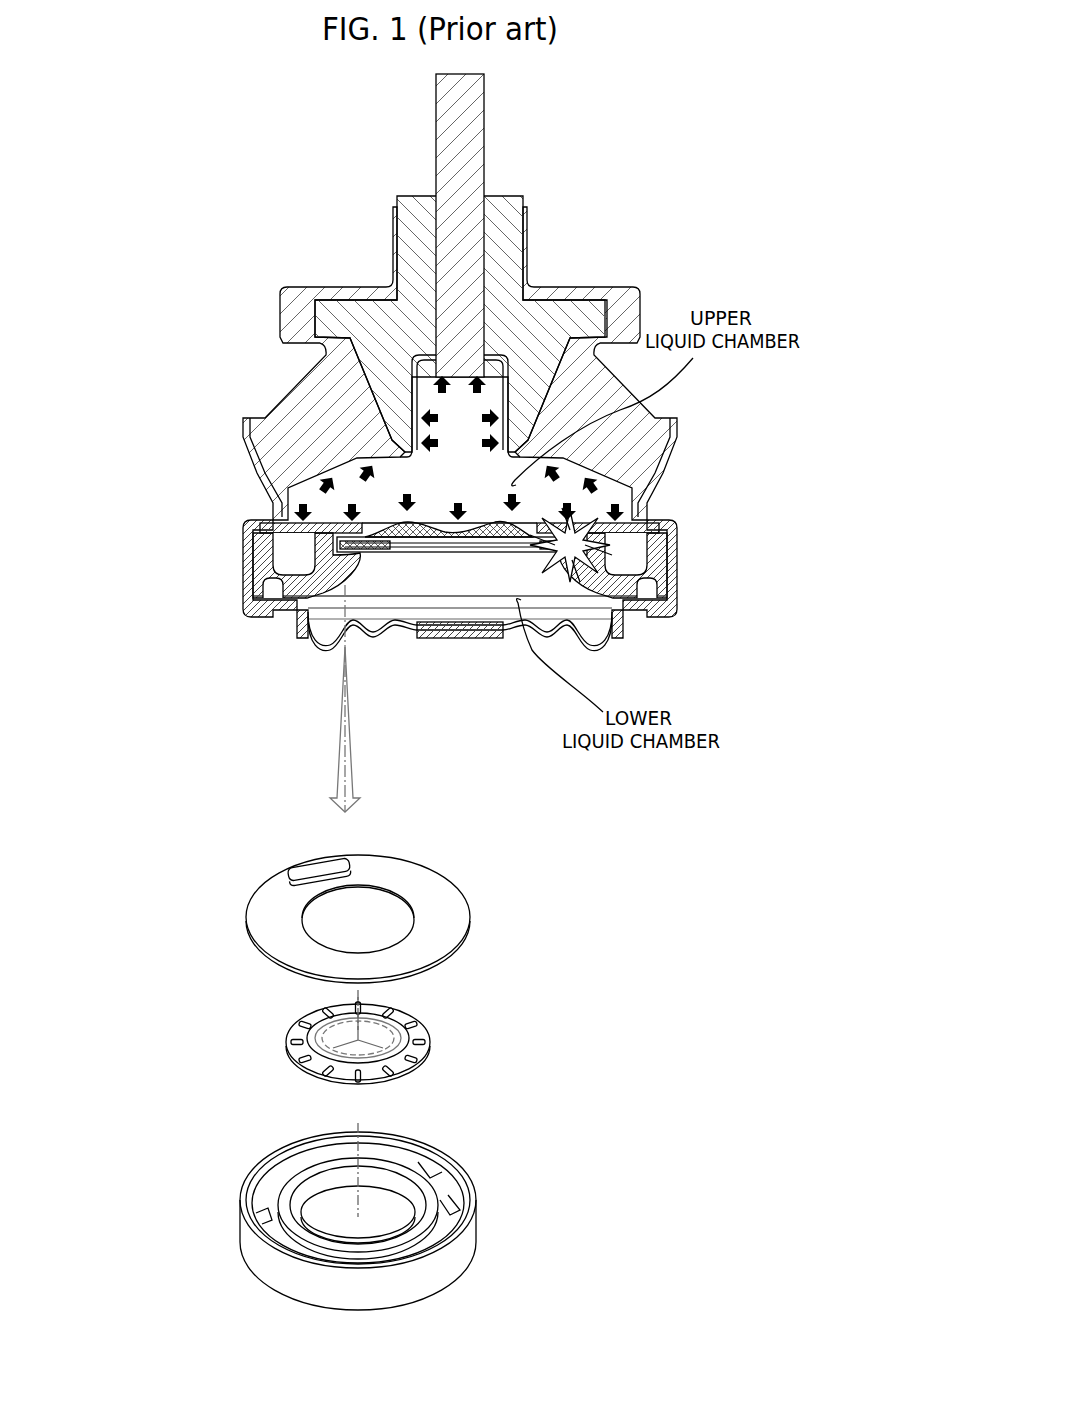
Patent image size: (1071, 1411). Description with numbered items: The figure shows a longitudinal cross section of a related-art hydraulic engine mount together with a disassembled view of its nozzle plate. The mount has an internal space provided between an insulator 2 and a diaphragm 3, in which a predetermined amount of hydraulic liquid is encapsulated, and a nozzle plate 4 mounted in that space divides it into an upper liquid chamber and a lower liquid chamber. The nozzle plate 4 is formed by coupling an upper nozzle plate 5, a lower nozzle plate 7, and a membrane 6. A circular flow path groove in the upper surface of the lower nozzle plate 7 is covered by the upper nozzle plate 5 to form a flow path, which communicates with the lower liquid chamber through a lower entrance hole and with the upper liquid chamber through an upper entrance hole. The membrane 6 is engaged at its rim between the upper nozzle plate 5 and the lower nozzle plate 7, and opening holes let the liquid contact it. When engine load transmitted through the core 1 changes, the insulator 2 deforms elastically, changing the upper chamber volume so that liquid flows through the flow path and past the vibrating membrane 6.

The core 1 is at (520, 318).
The insulator 2 is at (310, 408).
The diaphragm 3 is at (445, 633).
The nozzle plate 4 is at (657, 521).
The upper nozzle plate 5 is at (295, 558).
The membrane 6 is at (407, 1032).
The lower nozzle plate 7 is at (408, 1146).